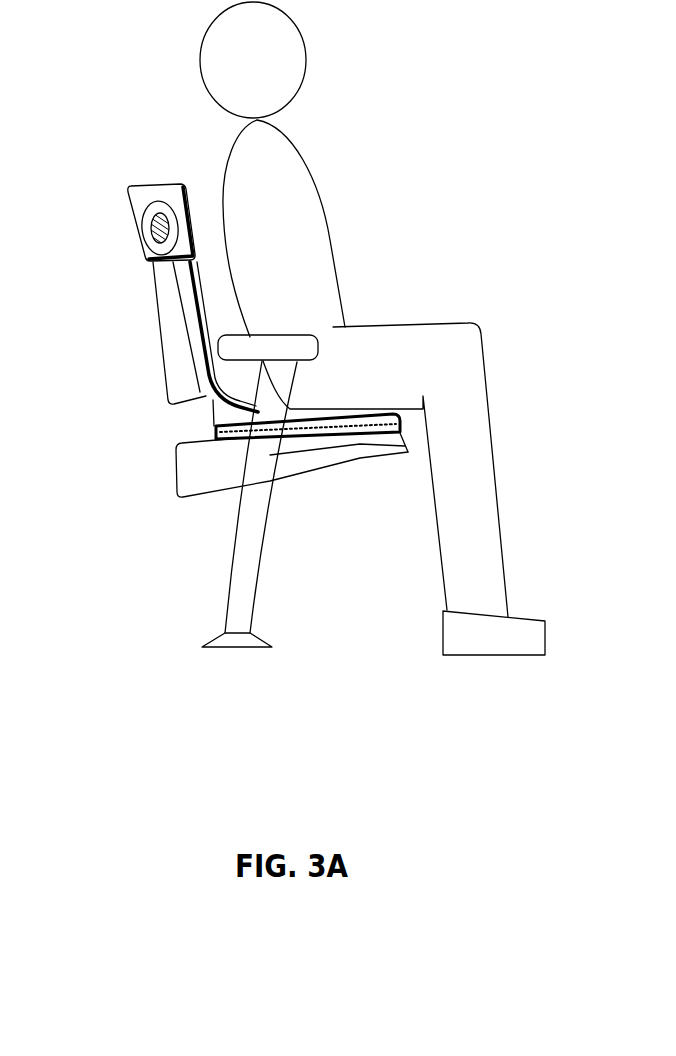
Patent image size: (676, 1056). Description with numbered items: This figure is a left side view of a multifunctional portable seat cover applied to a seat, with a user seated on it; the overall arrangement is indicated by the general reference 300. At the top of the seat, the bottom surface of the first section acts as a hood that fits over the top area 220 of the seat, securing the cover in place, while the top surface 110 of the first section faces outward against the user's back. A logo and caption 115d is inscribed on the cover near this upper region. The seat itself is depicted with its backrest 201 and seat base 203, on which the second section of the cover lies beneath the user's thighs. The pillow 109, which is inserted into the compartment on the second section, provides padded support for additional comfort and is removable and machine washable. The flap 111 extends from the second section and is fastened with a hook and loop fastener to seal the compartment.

The seating system 300 is at (133, 87).
The top area of the seat 220 is at (125, 210).
The logo and caption 115d is at (135, 184).
The top surface of the first section 110 is at (192, 207).
The seat back 201 is at (165, 329).
The seat pan 203 is at (178, 441).
The pillow 109 is at (326, 437).
The flap 111 is at (407, 453).